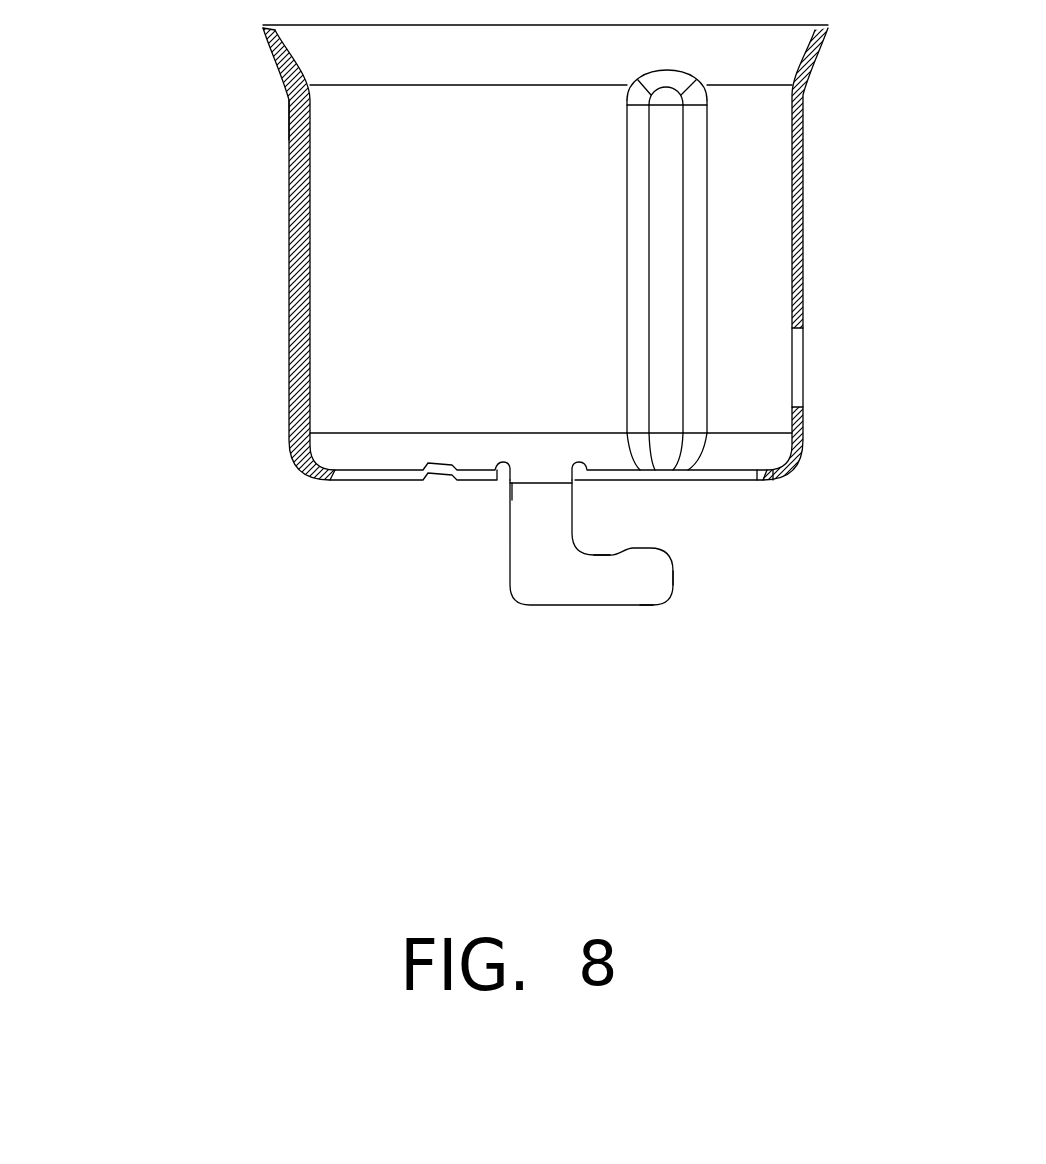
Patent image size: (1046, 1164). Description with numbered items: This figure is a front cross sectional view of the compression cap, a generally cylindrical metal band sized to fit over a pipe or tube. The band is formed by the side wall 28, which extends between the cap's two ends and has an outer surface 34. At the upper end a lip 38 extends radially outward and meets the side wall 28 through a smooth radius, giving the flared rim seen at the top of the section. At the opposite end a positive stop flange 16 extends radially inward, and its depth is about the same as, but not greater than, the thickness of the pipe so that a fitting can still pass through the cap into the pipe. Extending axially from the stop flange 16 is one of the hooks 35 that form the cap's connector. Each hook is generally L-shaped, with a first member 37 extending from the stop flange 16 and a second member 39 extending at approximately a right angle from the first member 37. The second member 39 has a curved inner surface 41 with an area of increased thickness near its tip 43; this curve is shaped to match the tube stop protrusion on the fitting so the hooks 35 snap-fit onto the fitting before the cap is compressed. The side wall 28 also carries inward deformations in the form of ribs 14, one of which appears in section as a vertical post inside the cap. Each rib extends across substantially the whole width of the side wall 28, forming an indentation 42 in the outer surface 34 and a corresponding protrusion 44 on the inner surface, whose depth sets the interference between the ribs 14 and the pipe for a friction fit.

The ribs 14 is at (290, 220).
The positive stop flange 16 is at (330, 483).
The side wall 28 is at (803, 197).
The outer surface 34 is at (288, 297).
The hooks 35 is at (583, 588).
The first member 37 is at (527, 510).
The lip 38 is at (278, 57).
The second member 39 is at (637, 590).
The inner surface 41 is at (610, 553).
The indentation 42 is at (290, 137).
The tip 43 is at (673, 582).
The protrusion 44 is at (661, 284).